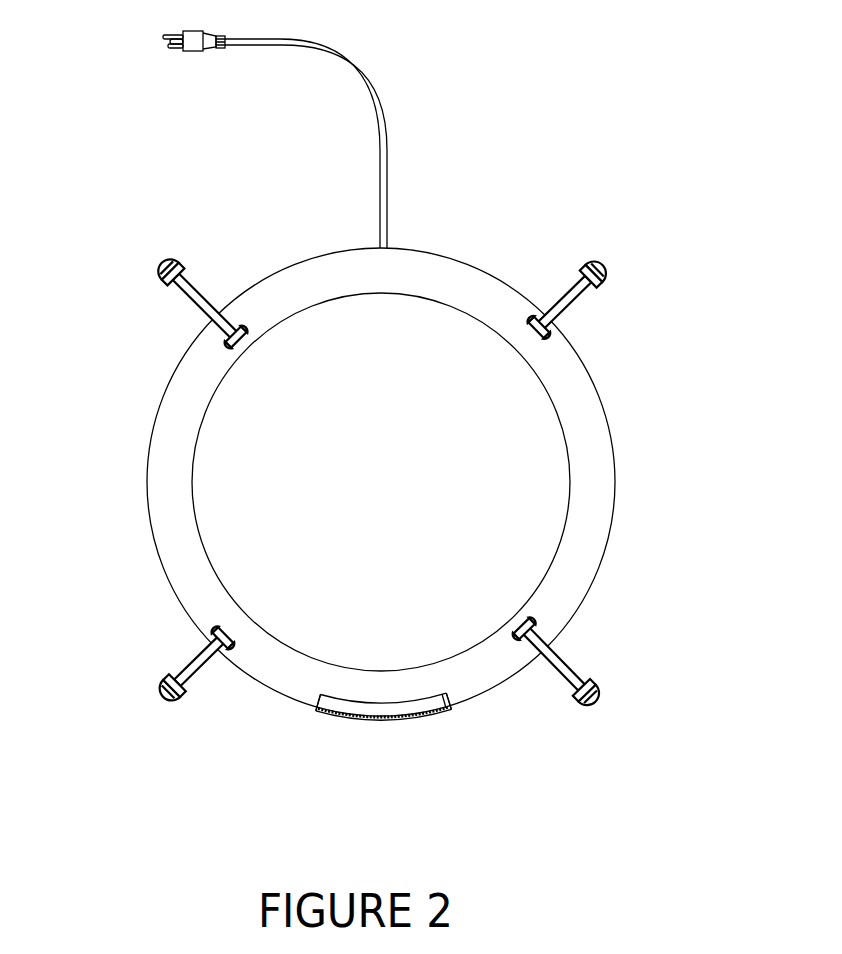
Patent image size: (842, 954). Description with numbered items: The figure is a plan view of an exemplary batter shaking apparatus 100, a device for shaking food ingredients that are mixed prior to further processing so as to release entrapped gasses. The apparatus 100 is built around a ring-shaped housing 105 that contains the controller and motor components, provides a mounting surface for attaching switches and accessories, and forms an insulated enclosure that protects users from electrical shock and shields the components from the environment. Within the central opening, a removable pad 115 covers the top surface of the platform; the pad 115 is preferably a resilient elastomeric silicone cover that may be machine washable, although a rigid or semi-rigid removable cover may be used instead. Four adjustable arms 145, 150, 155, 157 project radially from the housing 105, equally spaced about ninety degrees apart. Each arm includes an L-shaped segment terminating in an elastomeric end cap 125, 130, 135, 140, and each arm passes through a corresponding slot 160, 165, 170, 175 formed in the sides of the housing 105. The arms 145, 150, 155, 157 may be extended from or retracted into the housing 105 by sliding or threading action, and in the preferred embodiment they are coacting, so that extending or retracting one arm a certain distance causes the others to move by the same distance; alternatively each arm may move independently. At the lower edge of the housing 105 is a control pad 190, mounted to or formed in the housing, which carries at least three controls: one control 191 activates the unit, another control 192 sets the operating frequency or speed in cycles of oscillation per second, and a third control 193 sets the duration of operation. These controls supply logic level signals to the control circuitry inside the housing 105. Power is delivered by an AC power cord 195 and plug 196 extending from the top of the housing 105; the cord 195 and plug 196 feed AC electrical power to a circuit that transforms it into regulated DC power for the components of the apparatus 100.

The batter shaking apparatus 100 is at (135, 513).
The housing 105 is at (603, 440).
The removable pad 115 is at (550, 520).
The elastomeric end cap 125 is at (595, 687).
The elastomeric end cap 130 is at (162, 681).
The elastomeric end cap 135 is at (602, 283).
The elastomeric end cap 140 is at (167, 280).
The adjustable arm 145 is at (558, 662).
The adjustable arm 150 is at (188, 662).
The adjustable arm 155 is at (573, 304).
The adjustable arm 157 is at (195, 308).
The slot 160 is at (532, 615).
The slot 165 is at (235, 646).
The slot 170 is at (530, 318).
The slot 175 is at (227, 348).
The control pad 190 is at (358, 718).
The control 191 is at (328, 712).
The control 192 is at (383, 718).
The control 193 is at (438, 716).
The AC power cord 195 is at (386, 163).
The plug 196 is at (204, 50).